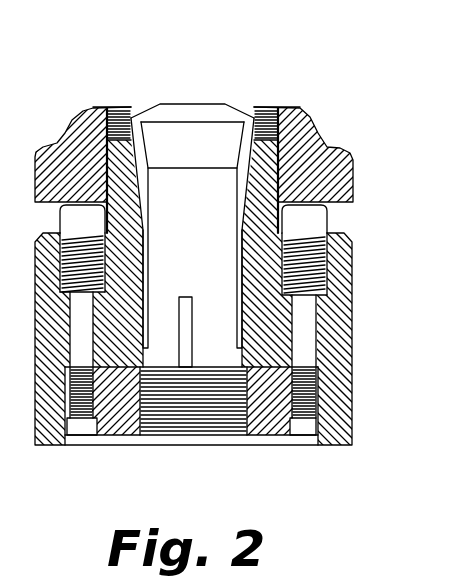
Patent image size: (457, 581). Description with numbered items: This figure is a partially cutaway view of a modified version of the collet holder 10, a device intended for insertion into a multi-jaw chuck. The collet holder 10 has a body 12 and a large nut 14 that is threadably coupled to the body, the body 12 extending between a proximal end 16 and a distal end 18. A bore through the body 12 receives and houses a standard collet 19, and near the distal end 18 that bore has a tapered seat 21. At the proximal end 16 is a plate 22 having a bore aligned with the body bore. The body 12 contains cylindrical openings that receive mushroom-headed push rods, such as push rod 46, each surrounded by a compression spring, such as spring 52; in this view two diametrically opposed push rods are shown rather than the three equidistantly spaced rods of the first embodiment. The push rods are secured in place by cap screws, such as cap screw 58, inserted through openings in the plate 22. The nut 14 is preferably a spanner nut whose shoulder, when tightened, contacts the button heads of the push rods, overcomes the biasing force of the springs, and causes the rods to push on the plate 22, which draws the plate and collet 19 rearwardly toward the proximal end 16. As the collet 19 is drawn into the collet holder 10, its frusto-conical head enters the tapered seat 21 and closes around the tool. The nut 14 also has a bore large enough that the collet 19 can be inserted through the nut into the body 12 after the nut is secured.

The collet holder 10 is at (352, 90).
The body 12 is at (333, 343).
The nut 14 is at (343, 177).
The proximal end 16 is at (353, 445).
The distal end 18 is at (93, 109).
The collet 19 is at (213, 147).
The tapered seat 21 is at (133, 110).
The plate 22 is at (118, 420).
The push rod 46 is at (310, 215).
The spring 52 is at (320, 268).
The cap screw 58 is at (308, 427).